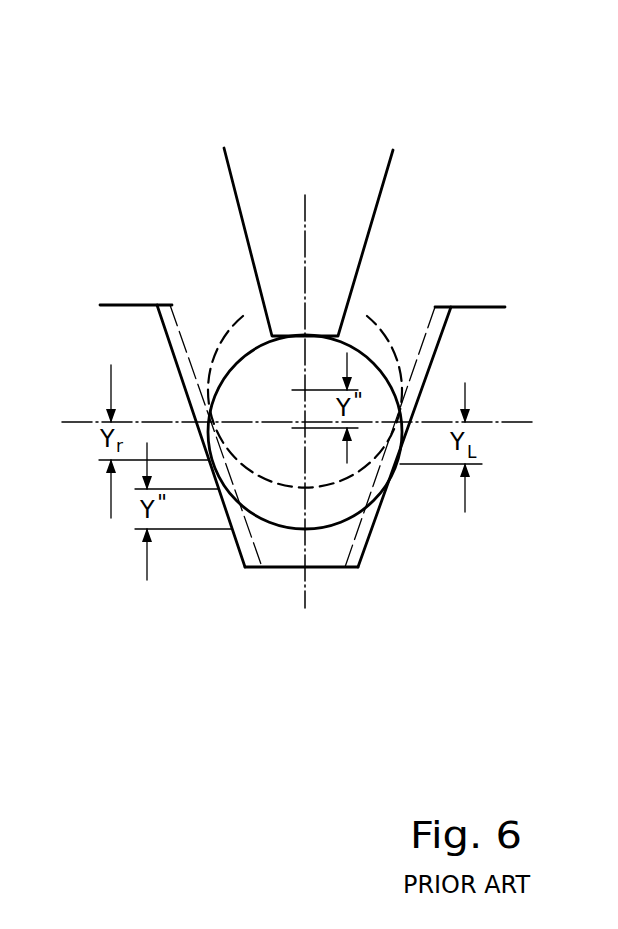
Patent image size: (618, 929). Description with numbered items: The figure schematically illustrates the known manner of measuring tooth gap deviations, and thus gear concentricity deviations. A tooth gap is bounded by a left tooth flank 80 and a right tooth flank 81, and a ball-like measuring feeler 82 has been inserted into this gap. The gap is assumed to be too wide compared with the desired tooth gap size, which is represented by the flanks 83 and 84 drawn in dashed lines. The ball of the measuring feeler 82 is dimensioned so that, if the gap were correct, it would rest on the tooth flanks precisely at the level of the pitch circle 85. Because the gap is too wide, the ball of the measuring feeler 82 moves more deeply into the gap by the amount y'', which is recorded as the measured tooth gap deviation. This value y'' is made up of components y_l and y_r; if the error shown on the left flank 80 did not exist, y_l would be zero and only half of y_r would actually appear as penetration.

The left tooth flank 80 is at (438, 362).
The right tooth flank 81 is at (168, 350).
The ball-like measuring feeler 82 is at (357, 166).
The flank of desired tooth gap 83 is at (432, 330).
The flank of desired tooth gap 84 is at (180, 322).
The pitch circle 85 is at (82, 422).